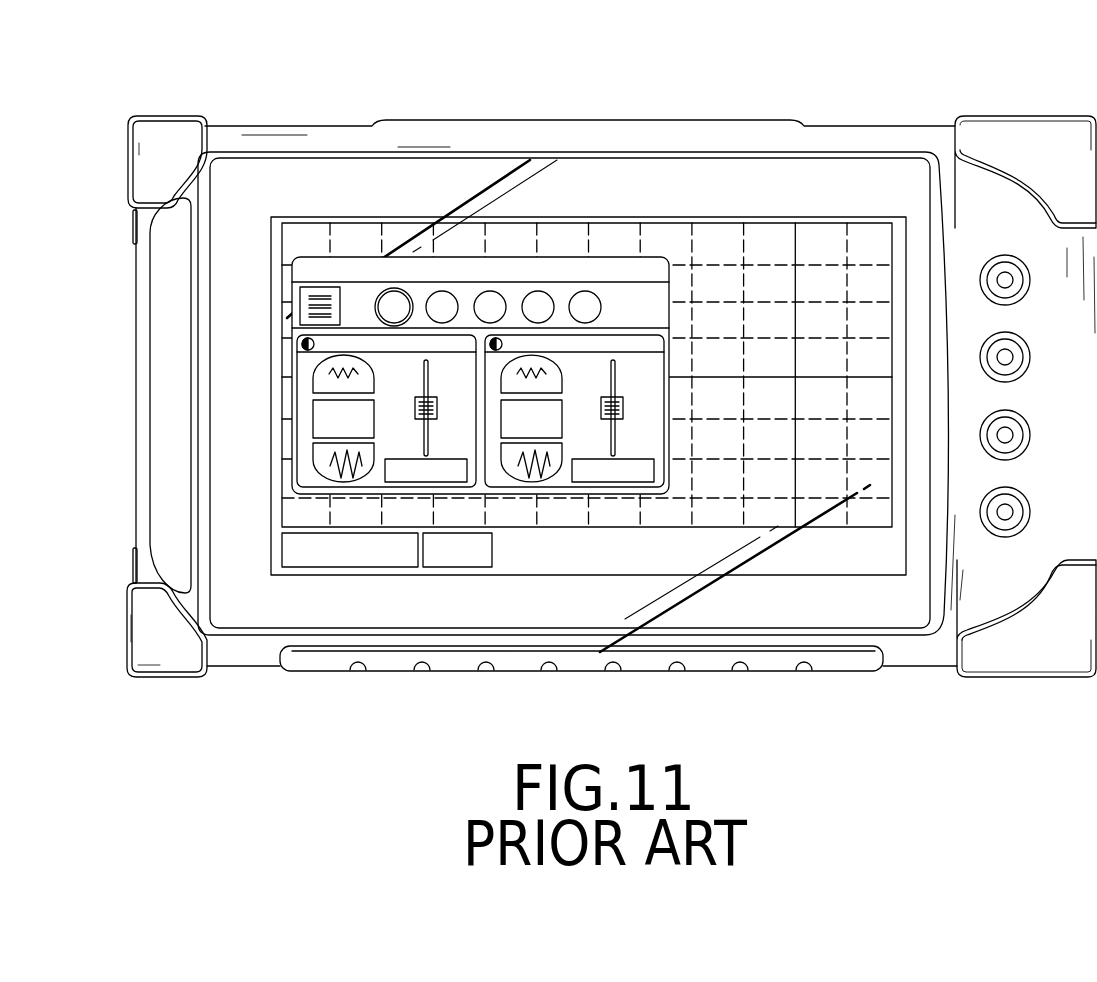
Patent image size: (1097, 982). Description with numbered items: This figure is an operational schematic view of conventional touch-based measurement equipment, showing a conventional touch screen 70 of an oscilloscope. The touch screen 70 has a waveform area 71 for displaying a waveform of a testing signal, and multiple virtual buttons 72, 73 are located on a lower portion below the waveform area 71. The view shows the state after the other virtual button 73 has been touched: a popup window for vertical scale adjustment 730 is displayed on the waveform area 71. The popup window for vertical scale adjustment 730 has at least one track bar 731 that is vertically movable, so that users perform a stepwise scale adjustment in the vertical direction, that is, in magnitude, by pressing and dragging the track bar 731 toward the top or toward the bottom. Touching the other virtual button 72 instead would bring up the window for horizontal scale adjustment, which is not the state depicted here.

The touch screen 70 is at (580, 391).
The waveform area 71 is at (485, 391).
The virtual button 72 is at (472, 567).
The virtual button 73 is at (350, 567).
The popup window for vertical scale adjustment 730 is at (367, 267).
The track bar 731 is at (415, 407).